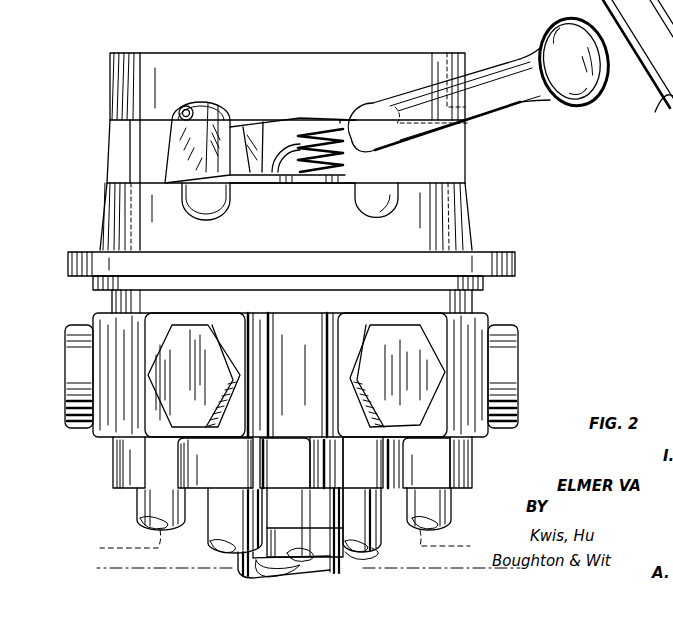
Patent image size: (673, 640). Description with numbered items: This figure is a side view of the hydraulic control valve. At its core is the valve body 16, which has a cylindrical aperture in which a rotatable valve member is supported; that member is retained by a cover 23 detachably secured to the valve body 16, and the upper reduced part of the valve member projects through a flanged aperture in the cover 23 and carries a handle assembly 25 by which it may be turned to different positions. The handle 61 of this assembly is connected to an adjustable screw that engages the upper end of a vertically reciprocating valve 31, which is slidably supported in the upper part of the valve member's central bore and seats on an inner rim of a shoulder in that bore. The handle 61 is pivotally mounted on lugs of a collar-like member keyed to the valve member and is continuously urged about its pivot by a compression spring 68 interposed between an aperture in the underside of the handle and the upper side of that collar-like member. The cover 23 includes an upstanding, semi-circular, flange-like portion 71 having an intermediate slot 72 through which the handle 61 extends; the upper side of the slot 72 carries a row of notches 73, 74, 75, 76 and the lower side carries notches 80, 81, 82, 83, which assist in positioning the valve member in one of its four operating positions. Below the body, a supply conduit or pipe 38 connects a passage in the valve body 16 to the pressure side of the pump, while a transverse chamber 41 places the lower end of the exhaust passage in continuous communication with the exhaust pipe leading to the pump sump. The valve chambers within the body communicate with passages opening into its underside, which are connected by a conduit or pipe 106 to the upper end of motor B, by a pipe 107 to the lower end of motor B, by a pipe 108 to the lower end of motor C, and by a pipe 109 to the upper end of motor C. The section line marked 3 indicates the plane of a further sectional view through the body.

The flange-like portion 71 is at (223, 60).
The notch 73 is at (110, 112).
The slot 72 is at (107, 153).
The notch 80 is at (105, 205).
The notch 74 is at (185, 106).
The notch 75 is at (364, 110).
The vertically reciprocating valve 31 is at (270, 172).
The notch 81 is at (185, 205).
The notch 82 is at (398, 202).
The compression spring 68 is at (340, 163).
The handle assembly 25 is at (481, 64).
The handle 61 is at (578, 100).
The notch 76 is at (479, 124).
The notch 83 is at (470, 193).
The cover 23 is at (507, 258).
The valve body 16 is at (104, 436).
The section line 3- 3 is at (27, 375).
The conduit or pipe 106 is at (140, 502).
The conduit or pipe 107 is at (226, 500).
The conduit or pipe 108 is at (355, 500).
The conduit or pipe 109 is at (430, 498).
The supply conduit or pipe 38 is at (288, 540).
The transverse chamber 41 is at (360, 556).